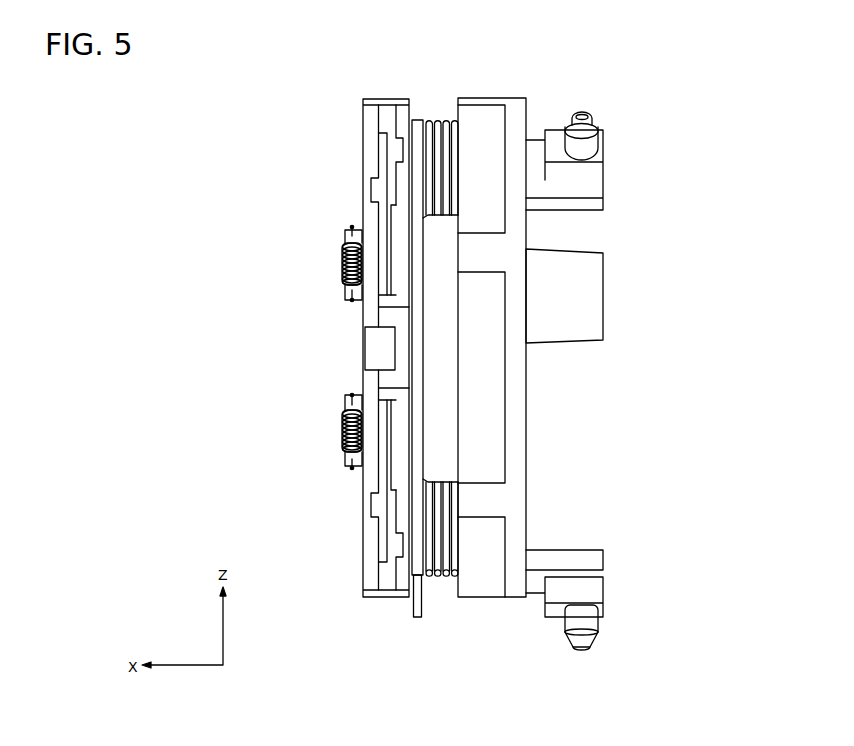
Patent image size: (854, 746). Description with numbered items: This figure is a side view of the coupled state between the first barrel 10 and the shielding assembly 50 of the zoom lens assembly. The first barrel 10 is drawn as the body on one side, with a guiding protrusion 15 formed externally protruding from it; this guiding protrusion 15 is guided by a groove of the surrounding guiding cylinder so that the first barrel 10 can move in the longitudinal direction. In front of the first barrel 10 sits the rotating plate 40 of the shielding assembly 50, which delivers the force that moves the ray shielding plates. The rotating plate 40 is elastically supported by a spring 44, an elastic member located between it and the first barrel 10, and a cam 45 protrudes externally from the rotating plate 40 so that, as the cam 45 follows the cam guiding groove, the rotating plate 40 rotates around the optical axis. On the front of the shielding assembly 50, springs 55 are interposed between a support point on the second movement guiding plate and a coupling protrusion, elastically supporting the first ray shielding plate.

The first barrel 10 is at (519, 99).
The guiding protrusion 15 is at (585, 640).
The rotating plate 40 is at (422, 117).
The spring 44 is at (437, 578).
The cam 45 is at (418, 620).
The shielding assembly 50 is at (378, 602).
The springs 55 is at (340, 410).